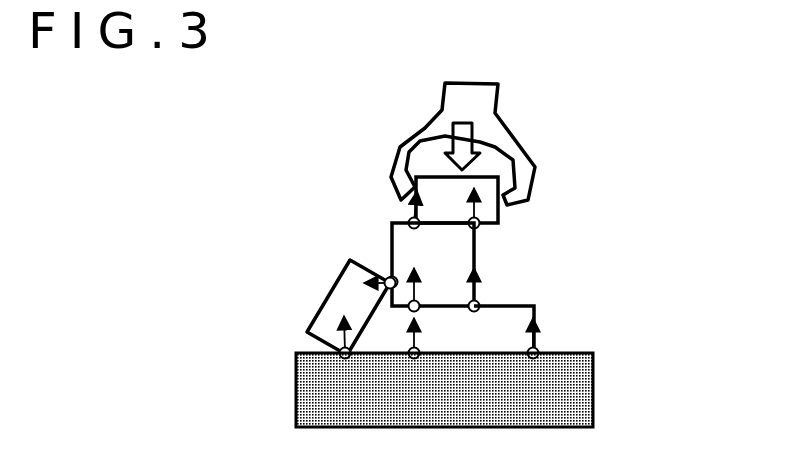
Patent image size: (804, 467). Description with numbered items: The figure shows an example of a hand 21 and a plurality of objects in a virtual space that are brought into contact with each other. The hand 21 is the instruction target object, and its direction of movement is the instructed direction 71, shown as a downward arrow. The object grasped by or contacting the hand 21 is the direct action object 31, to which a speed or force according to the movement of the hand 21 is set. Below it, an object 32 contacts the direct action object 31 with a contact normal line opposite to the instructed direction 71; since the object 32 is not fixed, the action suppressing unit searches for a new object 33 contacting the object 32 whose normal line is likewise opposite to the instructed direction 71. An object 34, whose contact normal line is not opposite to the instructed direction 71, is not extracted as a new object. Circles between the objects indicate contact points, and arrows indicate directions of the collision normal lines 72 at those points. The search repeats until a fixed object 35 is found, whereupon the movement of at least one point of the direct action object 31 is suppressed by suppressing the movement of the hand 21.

The hand 21 is at (498, 95).
The instructed direction 71 is at (452, 127).
The collision normal line 72 is at (415, 207).
The direct action object 31 is at (499, 215).
The object 32 is at (466, 260).
The new object 33 is at (520, 331).
The object 34 is at (324, 302).
The fixed object 35 is at (594, 390).